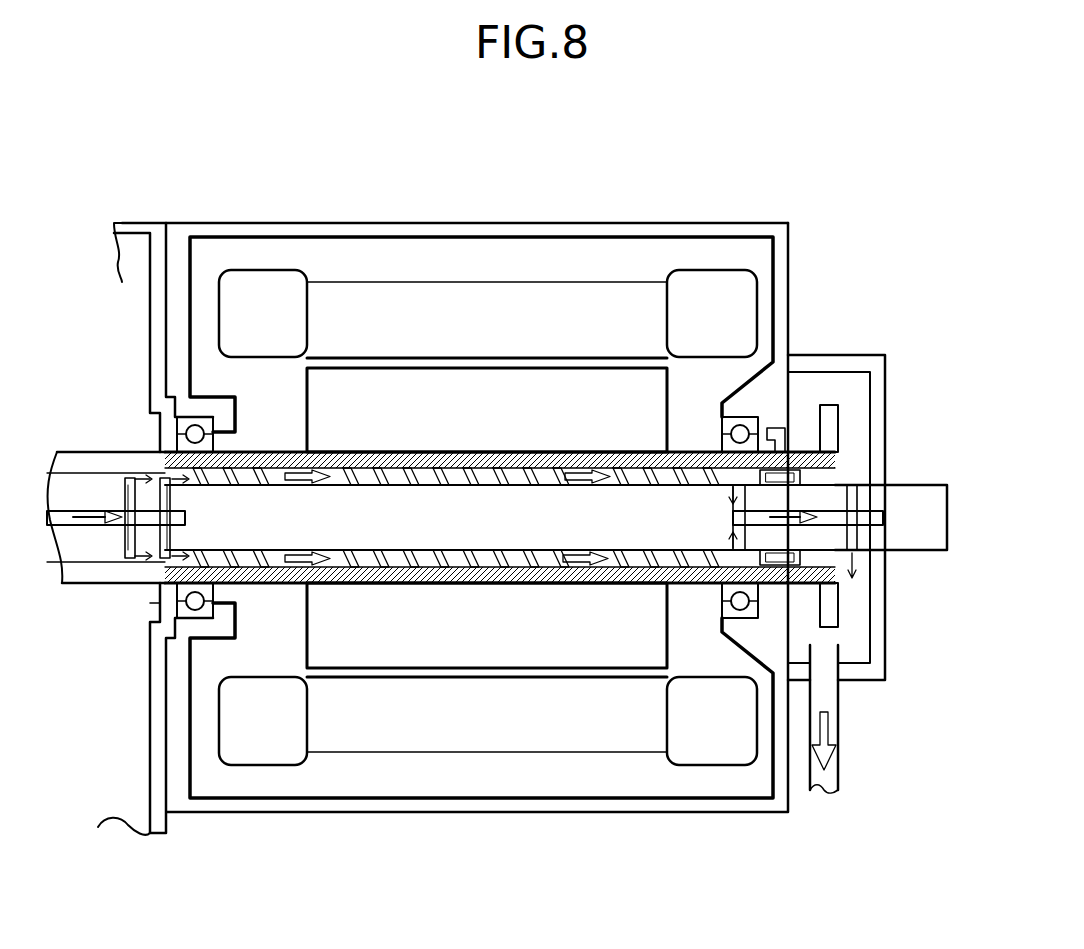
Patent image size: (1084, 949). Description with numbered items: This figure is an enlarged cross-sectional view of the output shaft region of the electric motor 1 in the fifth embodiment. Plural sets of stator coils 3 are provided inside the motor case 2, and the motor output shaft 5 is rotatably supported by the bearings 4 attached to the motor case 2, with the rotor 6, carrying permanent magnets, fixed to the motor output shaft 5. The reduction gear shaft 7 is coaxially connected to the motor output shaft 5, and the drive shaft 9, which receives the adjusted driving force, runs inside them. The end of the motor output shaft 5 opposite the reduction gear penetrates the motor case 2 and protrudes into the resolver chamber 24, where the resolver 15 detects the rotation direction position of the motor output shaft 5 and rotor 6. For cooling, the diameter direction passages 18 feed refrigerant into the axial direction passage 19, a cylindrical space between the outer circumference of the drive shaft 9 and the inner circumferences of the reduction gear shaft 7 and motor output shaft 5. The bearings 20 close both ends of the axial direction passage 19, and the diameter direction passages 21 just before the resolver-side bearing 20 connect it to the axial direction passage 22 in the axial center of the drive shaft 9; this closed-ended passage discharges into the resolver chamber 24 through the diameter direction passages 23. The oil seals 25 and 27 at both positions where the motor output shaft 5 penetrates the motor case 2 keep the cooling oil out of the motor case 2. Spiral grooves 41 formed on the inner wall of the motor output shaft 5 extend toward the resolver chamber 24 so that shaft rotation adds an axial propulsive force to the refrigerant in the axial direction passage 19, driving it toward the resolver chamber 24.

The electric motor 1 is at (528, 214).
The motor case 2 is at (689, 223).
The stator coils 3 is at (380, 703).
The bearings 4 is at (200, 437).
The motor output shaft 5 is at (502, 583).
The rotor 6 is at (437, 628).
The reduction gear shaft 7 is at (130, 457).
The drive shaft 9 is at (600, 530).
The resolver 15 is at (838, 420).
The diameter direction passages 18 is at (128, 500).
The axial direction passage 19 is at (365, 480).
The bearings 20 is at (800, 583).
The diameter direction passages 21 is at (745, 530).
The axial direction passage 22 is at (885, 520).
The diameter direction passages 23 is at (857, 537).
The resolver chamber 24 is at (855, 430).
The oil seal 25 is at (775, 430).
The oil seal 27 is at (150, 617).
The spiral grooves 41 is at (368, 583).